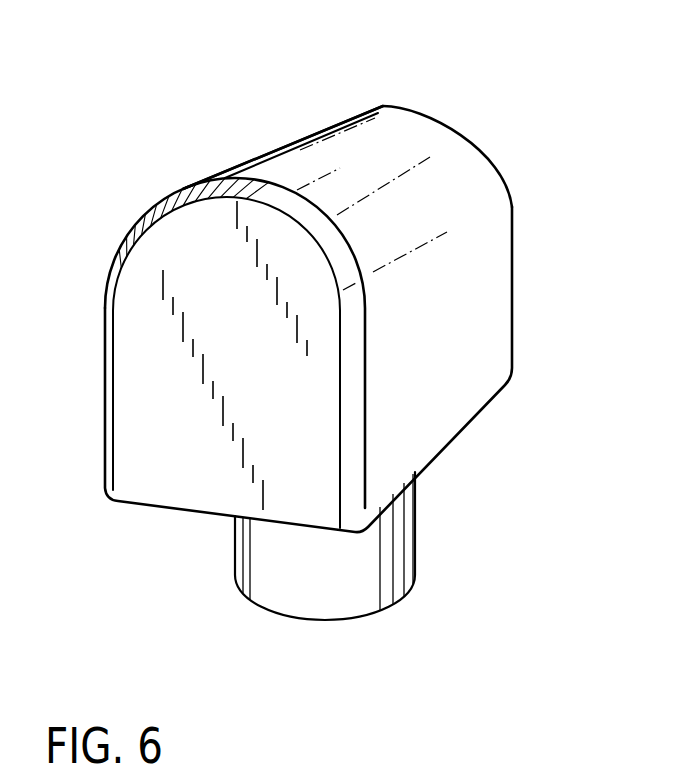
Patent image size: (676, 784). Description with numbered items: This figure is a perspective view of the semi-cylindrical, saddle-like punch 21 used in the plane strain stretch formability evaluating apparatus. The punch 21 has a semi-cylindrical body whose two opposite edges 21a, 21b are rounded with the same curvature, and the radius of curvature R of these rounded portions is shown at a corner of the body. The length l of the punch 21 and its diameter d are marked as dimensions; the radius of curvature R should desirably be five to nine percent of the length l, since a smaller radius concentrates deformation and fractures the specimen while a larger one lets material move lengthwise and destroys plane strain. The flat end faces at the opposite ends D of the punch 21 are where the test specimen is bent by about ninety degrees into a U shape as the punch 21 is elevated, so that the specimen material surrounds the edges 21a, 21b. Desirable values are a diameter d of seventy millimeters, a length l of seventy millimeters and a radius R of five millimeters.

The semi-cylindrical punch 21 is at (495, 325).
The edge of the punch 21a is at (218, 190).
The edge of the punch 21b is at (413, 108).
The opposite ends of the punch D is at (493, 163).
The radius of curvature R is at (348, 534).
The diameter of the punch d is at (352, 680).
The length of the punch l is at (517, 500).